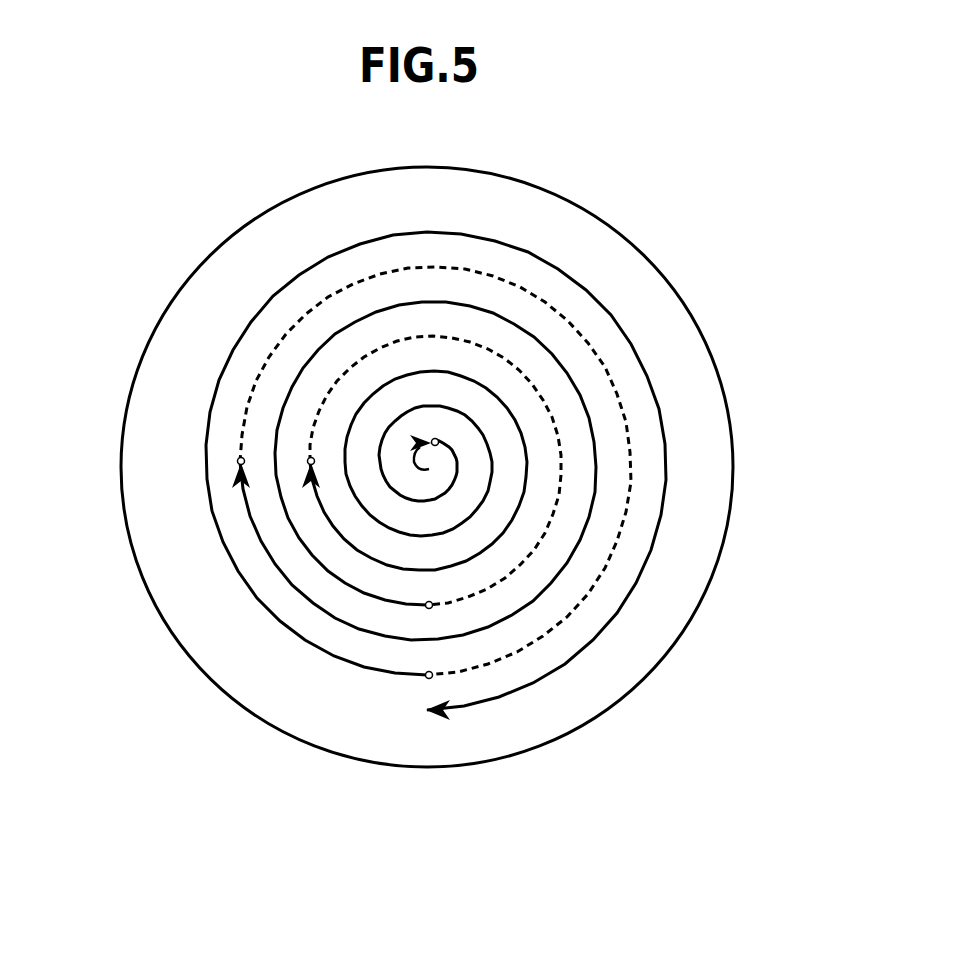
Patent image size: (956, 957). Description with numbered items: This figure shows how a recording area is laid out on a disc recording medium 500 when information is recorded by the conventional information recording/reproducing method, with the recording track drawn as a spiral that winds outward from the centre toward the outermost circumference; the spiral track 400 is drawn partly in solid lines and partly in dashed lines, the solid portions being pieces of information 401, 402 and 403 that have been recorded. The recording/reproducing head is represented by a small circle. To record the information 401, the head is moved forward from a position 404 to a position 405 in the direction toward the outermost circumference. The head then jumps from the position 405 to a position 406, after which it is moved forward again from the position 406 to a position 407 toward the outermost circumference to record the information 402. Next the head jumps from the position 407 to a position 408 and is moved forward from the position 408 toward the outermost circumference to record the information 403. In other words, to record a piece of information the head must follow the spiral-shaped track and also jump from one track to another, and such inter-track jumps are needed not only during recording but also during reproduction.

The disc recording medium 500 is at (720, 370).
The spiral track 400 is at (413, 468).
The information 401 is at (440, 375).
The information 402 is at (593, 350).
The information 403 is at (578, 283).
The position 404 is at (436, 440).
The position 405 is at (312, 458).
The position 406 is at (430, 602).
The position 407 is at (243, 458).
The position 408 is at (430, 672).